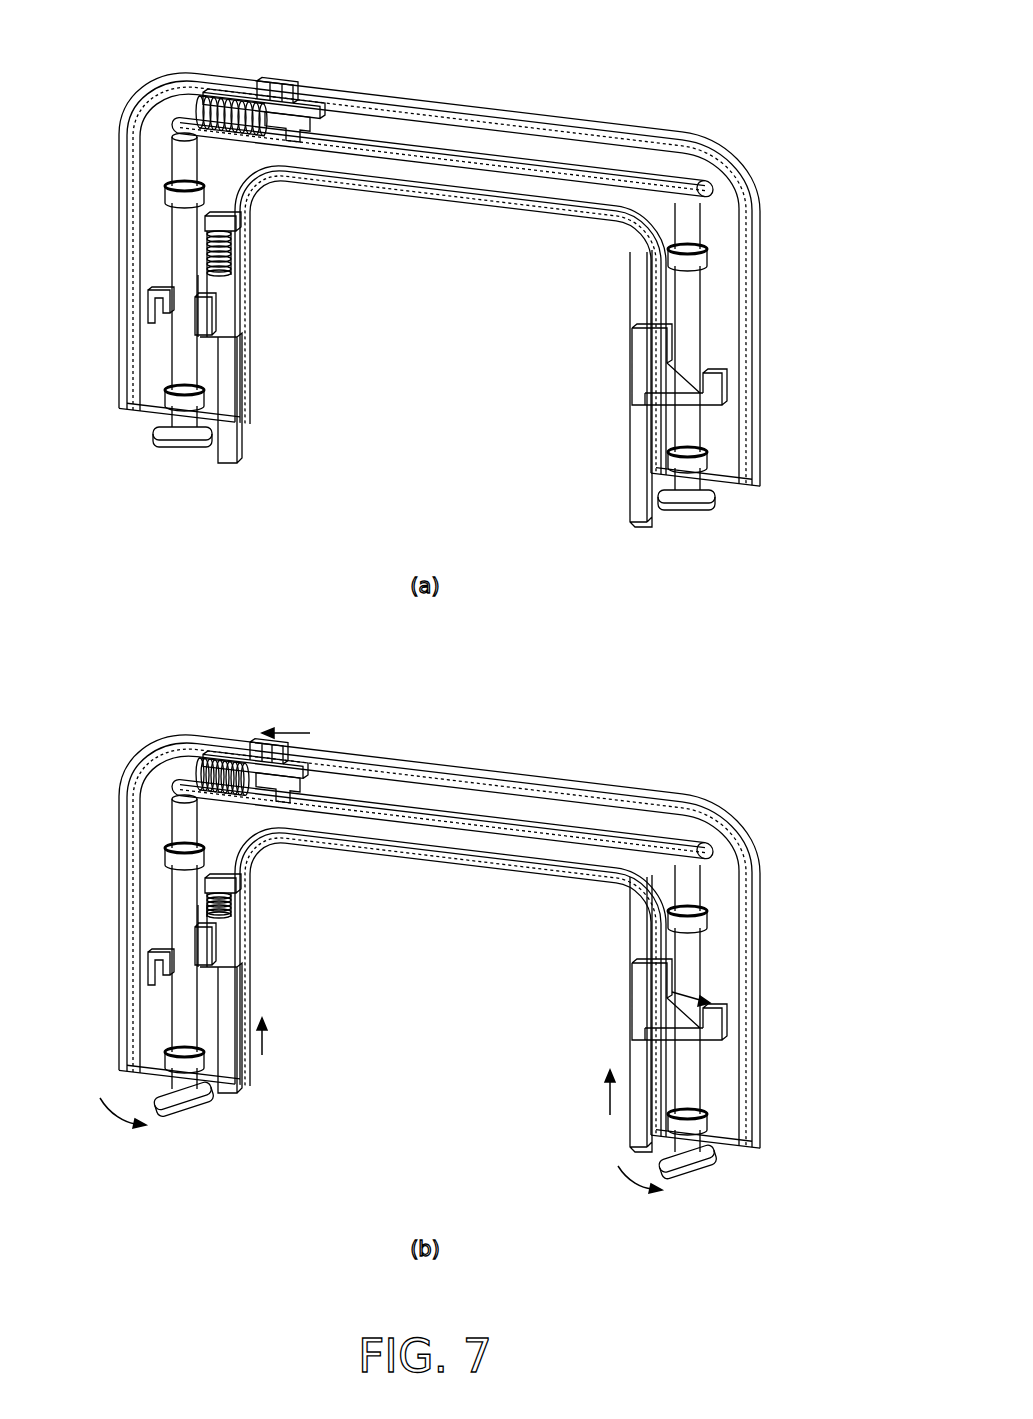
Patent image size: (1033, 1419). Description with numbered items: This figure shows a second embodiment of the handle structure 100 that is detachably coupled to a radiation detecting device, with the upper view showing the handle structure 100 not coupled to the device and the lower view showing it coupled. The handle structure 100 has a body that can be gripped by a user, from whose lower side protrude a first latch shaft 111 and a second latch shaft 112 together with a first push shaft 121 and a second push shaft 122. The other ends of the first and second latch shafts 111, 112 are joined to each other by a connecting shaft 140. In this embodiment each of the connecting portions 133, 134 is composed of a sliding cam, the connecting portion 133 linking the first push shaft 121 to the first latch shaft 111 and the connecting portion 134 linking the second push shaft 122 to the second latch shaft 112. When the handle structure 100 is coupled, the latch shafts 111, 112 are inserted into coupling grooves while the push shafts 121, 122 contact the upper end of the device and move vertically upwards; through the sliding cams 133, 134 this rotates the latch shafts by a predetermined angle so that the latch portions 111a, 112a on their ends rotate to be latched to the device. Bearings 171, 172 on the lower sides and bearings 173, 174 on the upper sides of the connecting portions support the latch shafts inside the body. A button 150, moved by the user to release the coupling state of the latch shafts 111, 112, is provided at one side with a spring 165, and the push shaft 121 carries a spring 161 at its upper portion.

The handle structure 100 is at (606, 122).
The first latch shaft 111 is at (178, 242).
The latch portion 111a is at (181, 448).
The second latch shaft 112 is at (692, 426).
The latch portion 112a is at (688, 516).
The first push shaft 121 is at (232, 380).
The second push shaft 122 is at (638, 444).
The connecting portion 133 is at (212, 318).
The connecting portion 134 is at (660, 385).
The connecting shaft 140 is at (445, 158).
The button 150 is at (298, 106).
The spring 161 is at (233, 250).
The spring 165 is at (215, 98).
The bearing 171 is at (178, 394).
The bearing 172 is at (708, 462).
The bearing 173 is at (167, 192).
The bearing 174 is at (708, 258).